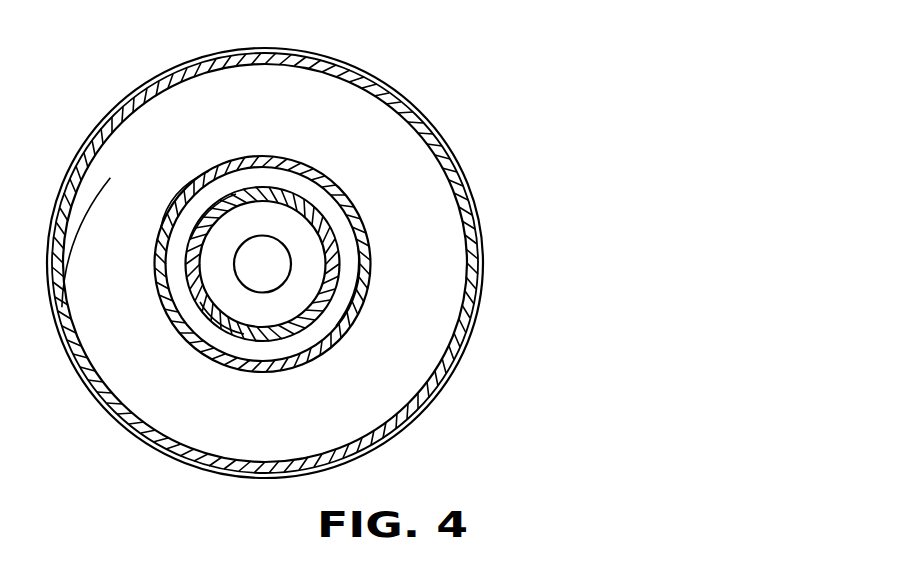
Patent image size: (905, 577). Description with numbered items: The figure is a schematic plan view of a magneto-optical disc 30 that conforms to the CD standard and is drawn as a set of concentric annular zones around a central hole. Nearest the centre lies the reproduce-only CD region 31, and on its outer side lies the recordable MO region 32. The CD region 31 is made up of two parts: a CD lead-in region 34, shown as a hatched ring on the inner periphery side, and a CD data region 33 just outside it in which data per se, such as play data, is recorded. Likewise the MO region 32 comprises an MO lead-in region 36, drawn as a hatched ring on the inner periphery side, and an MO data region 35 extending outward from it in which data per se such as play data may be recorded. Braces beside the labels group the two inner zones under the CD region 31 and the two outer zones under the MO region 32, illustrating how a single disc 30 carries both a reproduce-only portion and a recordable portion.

The magneto-optical disc 30 is at (102, 94).
The CD region 31 is at (603, 118).
The MO region 32 is at (685, 248).
The CD data region 33 is at (328, 207).
The CD lead-in region 34 is at (302, 207).
The MO data region 35 is at (428, 265).
The MO lead-in region 36 is at (355, 220).